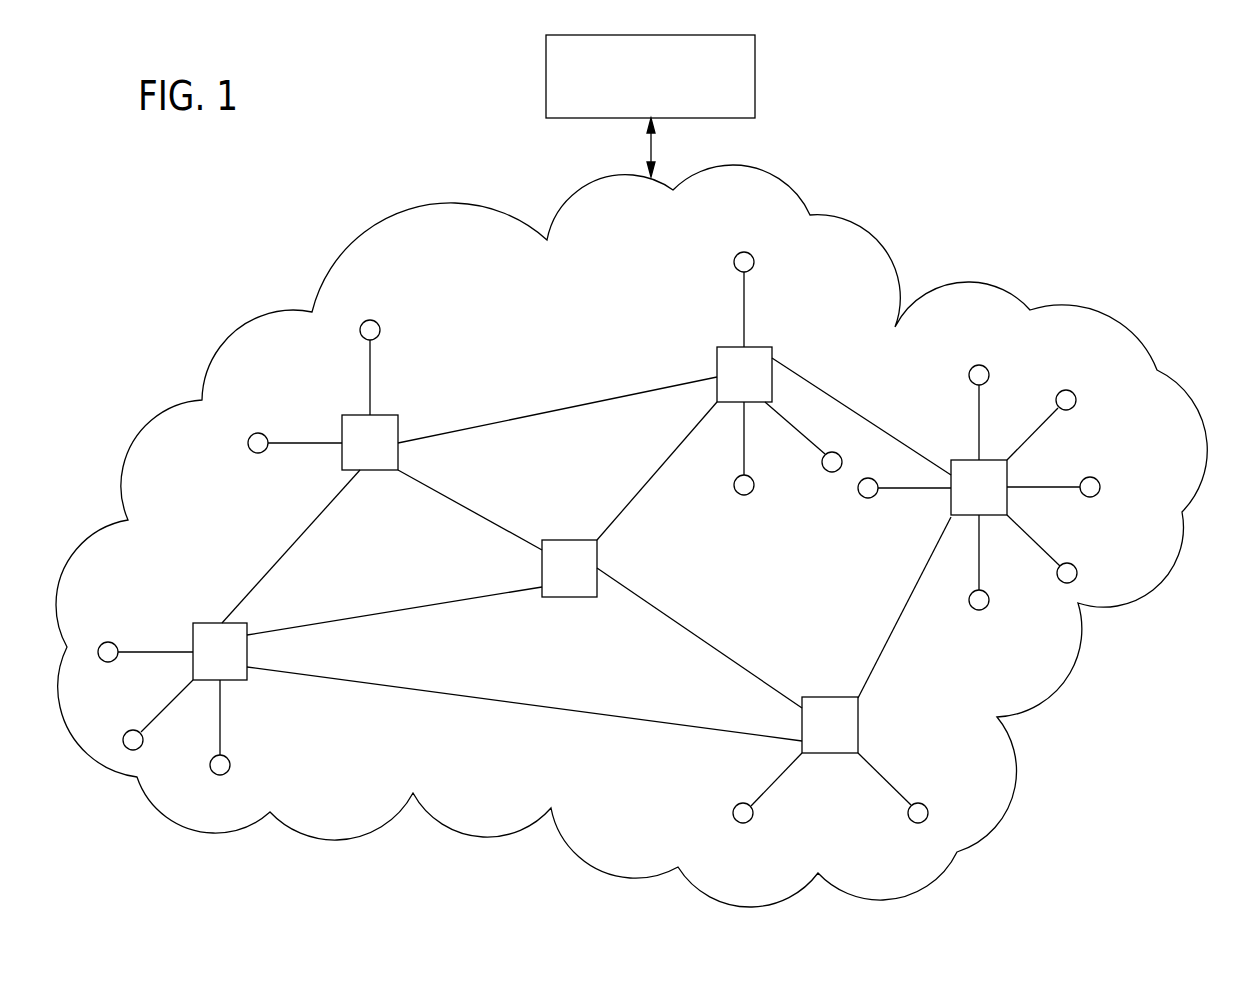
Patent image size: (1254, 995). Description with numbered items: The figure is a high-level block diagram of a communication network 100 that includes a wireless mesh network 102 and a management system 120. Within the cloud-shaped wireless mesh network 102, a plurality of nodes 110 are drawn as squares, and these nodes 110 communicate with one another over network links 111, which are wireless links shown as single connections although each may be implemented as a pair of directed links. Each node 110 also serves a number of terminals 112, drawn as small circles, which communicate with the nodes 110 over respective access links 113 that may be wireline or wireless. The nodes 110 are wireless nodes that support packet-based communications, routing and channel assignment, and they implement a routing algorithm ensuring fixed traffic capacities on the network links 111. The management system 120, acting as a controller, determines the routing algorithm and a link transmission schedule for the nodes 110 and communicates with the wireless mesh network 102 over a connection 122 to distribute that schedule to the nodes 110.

The communication network 100 is at (203, 156).
The wireless mesh network 102 is at (852, 222).
The node 110 is at (380, 471).
The network link 111 is at (647, 487).
The terminal 112 is at (381, 330).
The access link 113 is at (303, 443).
The management system 120 is at (756, 58).
The management communication link 122 is at (653, 146).